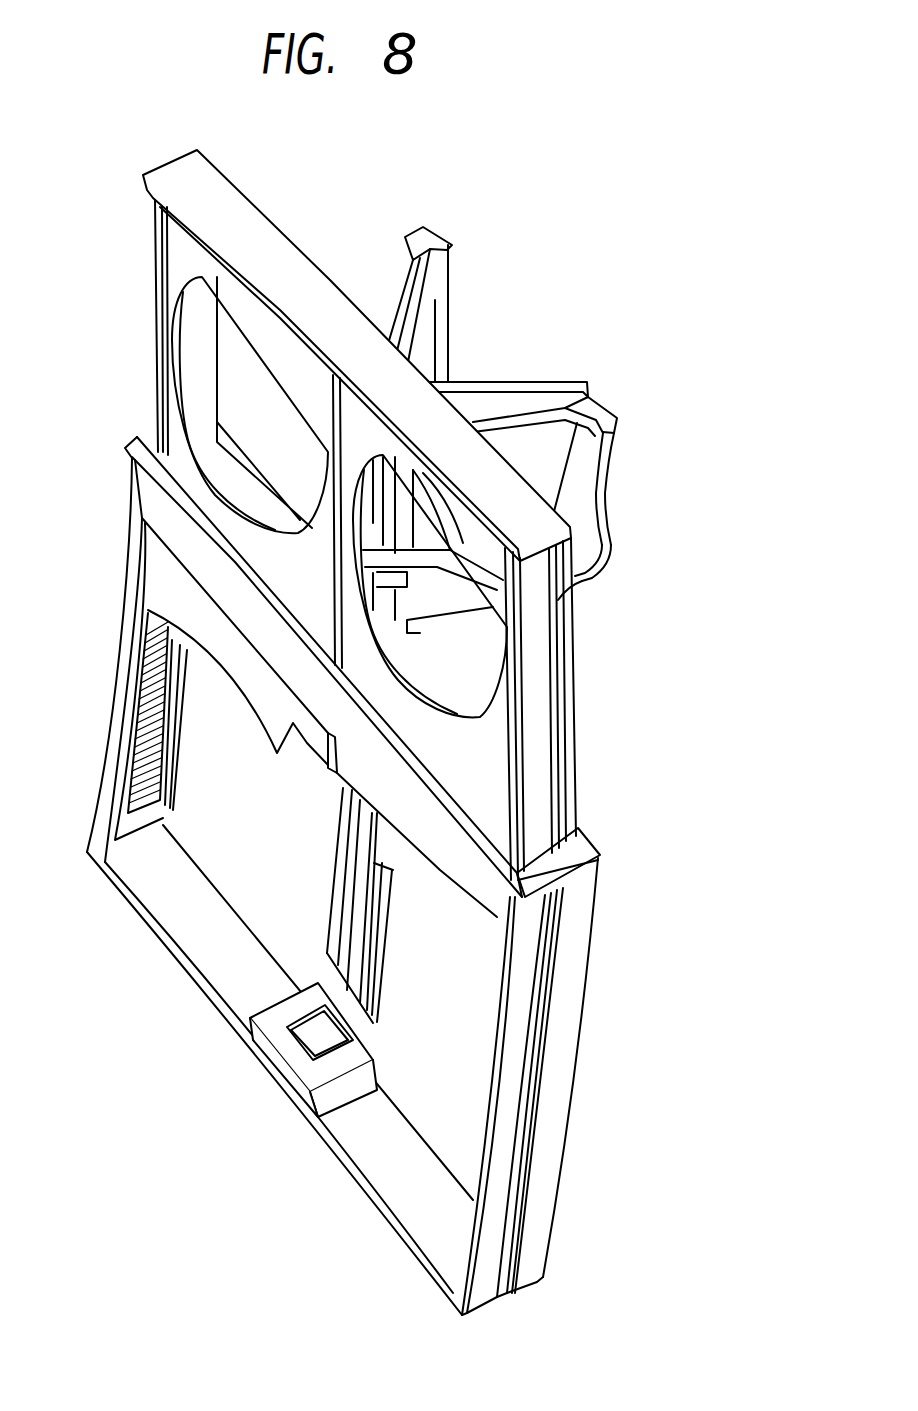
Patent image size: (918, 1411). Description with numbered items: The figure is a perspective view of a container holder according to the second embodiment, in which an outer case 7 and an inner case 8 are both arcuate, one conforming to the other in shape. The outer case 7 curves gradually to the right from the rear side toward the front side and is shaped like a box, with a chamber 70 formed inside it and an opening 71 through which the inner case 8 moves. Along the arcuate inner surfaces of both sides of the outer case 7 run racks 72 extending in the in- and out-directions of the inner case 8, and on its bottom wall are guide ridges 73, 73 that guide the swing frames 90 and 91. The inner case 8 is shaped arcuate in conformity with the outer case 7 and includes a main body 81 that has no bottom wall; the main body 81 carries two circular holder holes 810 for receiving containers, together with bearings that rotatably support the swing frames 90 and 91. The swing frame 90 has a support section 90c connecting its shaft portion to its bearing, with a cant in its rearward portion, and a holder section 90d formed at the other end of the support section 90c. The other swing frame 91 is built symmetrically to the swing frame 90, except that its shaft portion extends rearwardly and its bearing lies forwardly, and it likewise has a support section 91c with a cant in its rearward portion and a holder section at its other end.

The outer case 7 is at (177, 930).
The chamber 70 is at (262, 828).
The opening 71 is at (153, 432).
The racks 72 is at (140, 737).
The guide ridges 73 is at (327, 953).
The inner case 8 is at (172, 258).
The main body 81 is at (307, 589).
The circular holder holes 810 is at (325, 480).
The swing frame 90 is at (597, 413).
The support section 90c is at (521, 393).
The holder section 90d is at (587, 542).
The swing frame 91 is at (428, 245).
The support section 91c is at (420, 315).